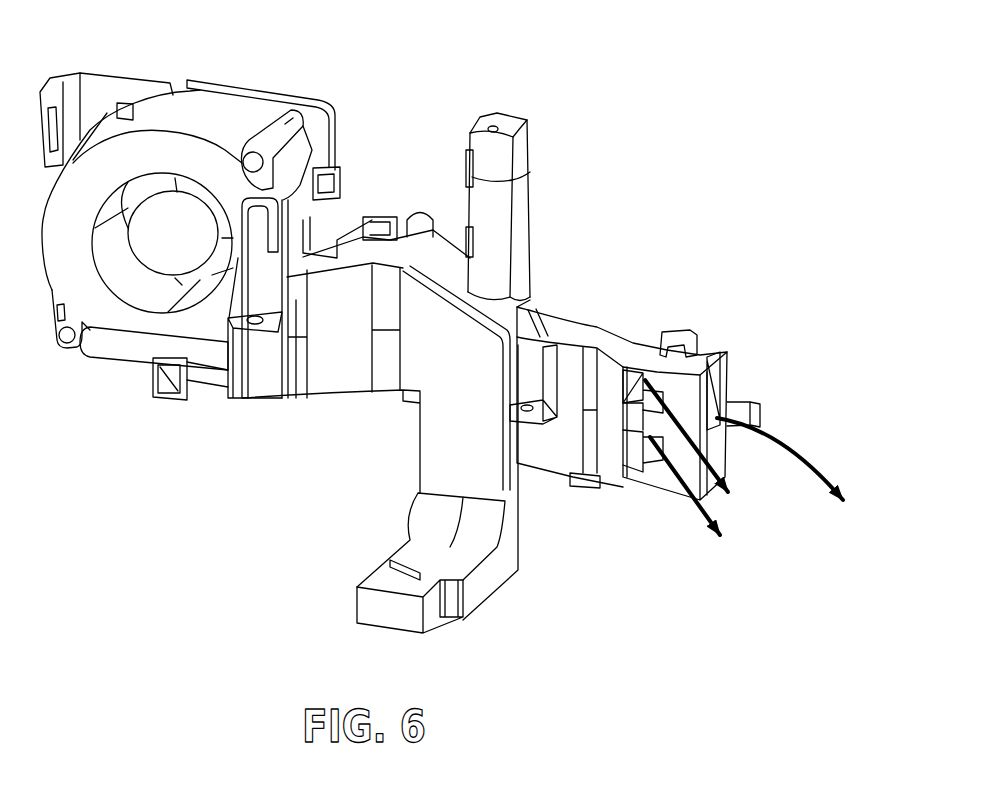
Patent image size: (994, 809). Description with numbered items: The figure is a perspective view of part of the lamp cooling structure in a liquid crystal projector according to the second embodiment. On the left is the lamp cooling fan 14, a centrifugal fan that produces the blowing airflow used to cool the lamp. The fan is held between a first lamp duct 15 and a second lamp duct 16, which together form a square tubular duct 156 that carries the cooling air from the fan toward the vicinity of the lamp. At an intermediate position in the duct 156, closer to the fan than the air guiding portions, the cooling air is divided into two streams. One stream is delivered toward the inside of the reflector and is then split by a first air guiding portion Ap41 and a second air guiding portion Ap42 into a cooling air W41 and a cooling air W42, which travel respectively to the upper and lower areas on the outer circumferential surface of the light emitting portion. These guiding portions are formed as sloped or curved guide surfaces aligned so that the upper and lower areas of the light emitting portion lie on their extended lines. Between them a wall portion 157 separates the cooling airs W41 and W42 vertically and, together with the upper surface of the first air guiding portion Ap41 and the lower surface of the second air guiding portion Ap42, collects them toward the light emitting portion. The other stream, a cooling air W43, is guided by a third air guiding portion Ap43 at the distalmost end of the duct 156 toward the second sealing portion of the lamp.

The lamp cooling fan 14 is at (153, 250).
The first lamp duct 15 is at (348, 367).
The second lamp duct 16 is at (303, 133).
The duct 156 is at (576, 333).
The wall portion 157 is at (633, 417).
The first air guiding portion Ap41 is at (638, 380).
The second air guiding portion Ap42 is at (642, 433).
The third air guiding portion Ap43 is at (717, 363).
The cooling air W41 is at (726, 476).
The cooling air W42 is at (685, 486).
The cooling air W43 is at (790, 459).